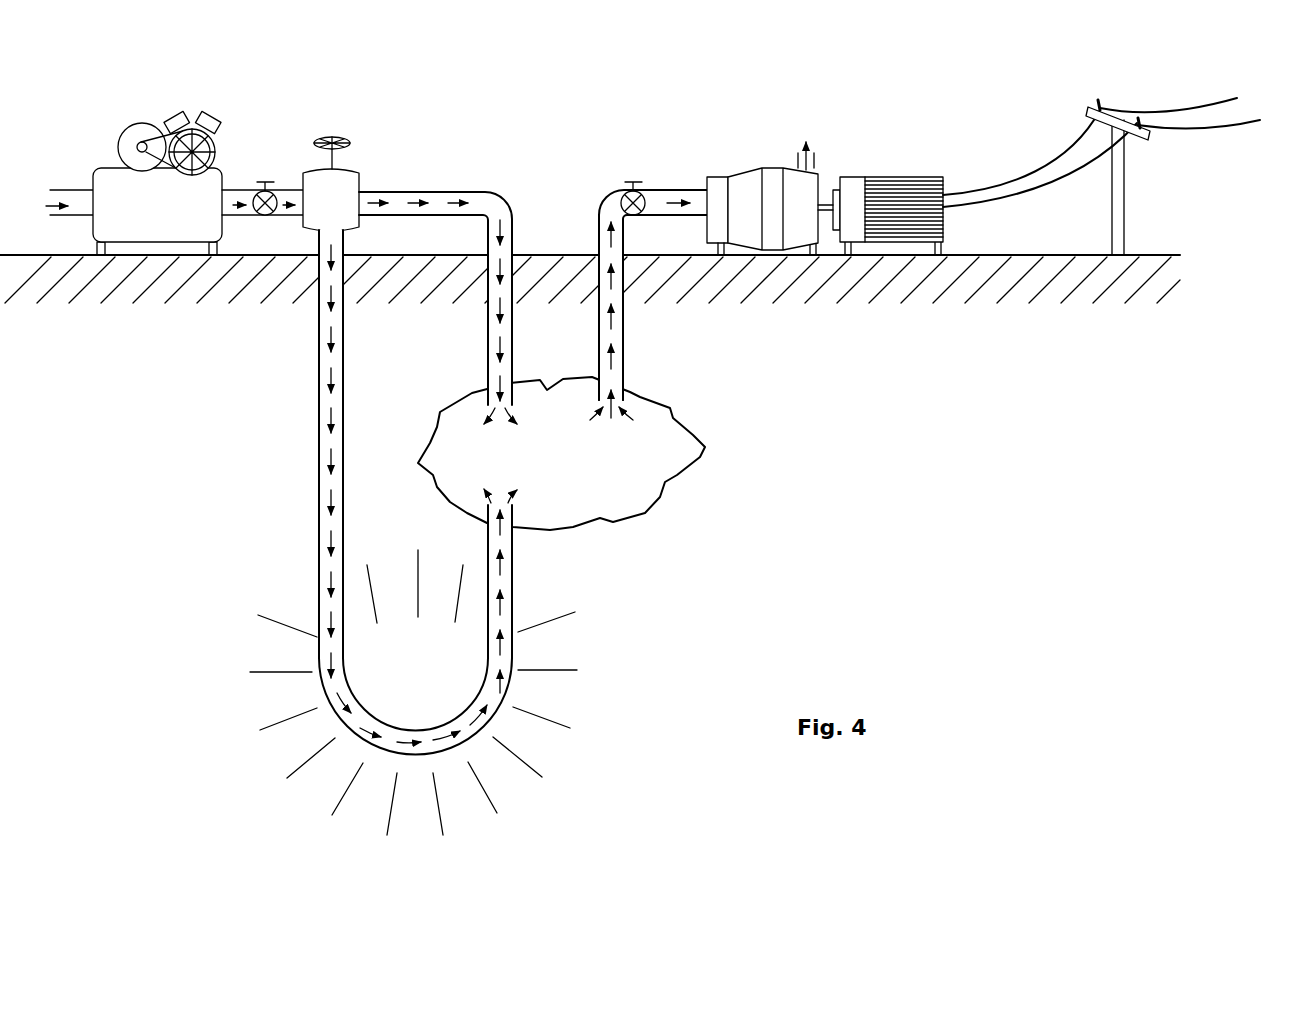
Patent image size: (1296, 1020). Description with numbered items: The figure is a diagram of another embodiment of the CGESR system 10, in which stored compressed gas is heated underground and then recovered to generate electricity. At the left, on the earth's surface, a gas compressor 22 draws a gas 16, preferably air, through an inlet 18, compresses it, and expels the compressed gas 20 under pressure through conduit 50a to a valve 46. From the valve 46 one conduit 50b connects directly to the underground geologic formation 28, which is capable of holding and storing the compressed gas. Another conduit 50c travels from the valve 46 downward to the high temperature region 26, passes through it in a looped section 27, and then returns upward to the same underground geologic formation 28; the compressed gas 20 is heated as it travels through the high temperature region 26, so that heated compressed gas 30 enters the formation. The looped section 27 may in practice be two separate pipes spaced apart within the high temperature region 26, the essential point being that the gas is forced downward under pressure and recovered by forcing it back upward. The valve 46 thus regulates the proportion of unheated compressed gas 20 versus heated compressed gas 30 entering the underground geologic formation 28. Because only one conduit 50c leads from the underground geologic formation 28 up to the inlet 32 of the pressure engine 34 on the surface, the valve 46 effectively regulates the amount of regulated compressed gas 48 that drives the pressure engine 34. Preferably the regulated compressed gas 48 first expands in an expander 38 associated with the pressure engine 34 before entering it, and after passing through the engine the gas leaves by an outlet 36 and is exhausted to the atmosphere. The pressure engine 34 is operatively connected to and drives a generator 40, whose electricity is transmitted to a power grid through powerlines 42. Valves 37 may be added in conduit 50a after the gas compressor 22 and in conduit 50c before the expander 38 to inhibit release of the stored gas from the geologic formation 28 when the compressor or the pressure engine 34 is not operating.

The CGESR system 10 is at (834, 115).
The gas 16 is at (47, 208).
The inlet 18 is at (85, 190).
The compressed gas 20 is at (237, 212).
The compressor 22 is at (227, 187).
The high temperature region 26 is at (428, 693).
The looped section 27 is at (476, 738).
The underground geologic formation 28 is at (662, 496).
The heated compressed gas 30 is at (507, 563).
The inlet 32 is at (703, 219).
The pressure engine 34 is at (770, 168).
The outlet 36 is at (798, 160).
The valves 37 is at (266, 180).
The expander 38 is at (716, 192).
The generator 40 is at (880, 177).
The powerlines 42 is at (1093, 172).
The valve 46 is at (344, 207).
The regulated compressed gas 48 is at (621, 330).
The conduit 50a is at (297, 190).
The conduit 50b is at (447, 190).
The conduit 50c is at (321, 418).